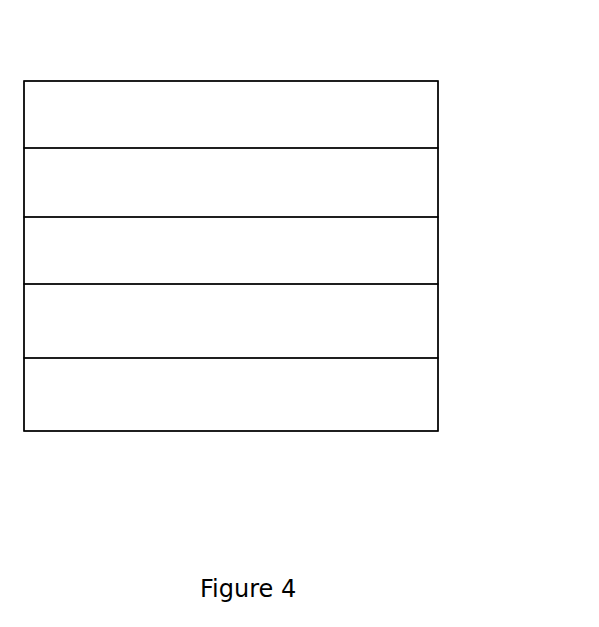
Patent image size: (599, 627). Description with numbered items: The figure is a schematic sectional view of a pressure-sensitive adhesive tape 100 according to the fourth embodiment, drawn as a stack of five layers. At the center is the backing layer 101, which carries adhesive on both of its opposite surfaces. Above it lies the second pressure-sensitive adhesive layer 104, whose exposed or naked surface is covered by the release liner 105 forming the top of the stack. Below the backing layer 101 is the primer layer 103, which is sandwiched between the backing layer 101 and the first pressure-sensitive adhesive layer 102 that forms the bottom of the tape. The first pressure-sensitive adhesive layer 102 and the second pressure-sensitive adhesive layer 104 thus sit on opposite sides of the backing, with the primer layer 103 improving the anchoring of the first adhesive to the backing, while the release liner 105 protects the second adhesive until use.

The pressure-sensitive adhesive tape 100 is at (149, 78).
The release liner 105 is at (450, 113).
The second pressure-sensitive adhesive layer 104 is at (450, 175).
The backing layer 101 is at (450, 257).
The primer layer 103 is at (450, 332).
The first pressure-sensitive adhesive layer 102 is at (450, 404).